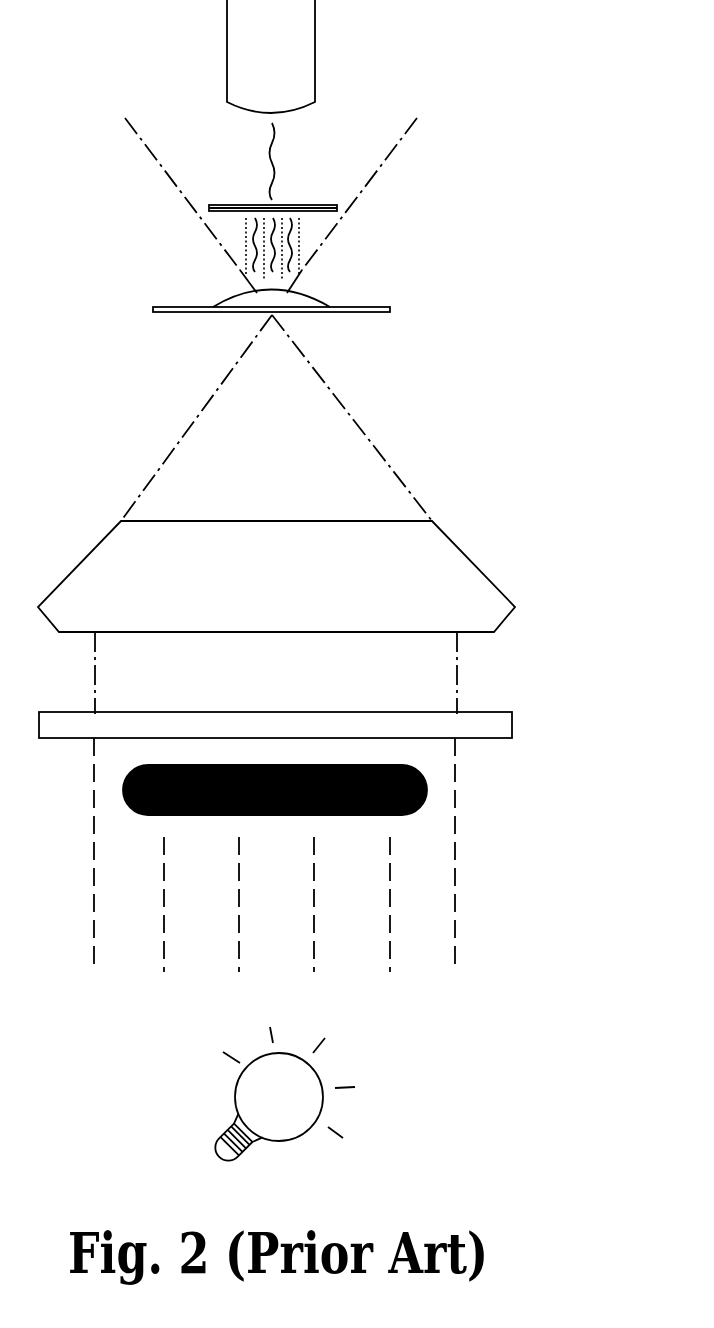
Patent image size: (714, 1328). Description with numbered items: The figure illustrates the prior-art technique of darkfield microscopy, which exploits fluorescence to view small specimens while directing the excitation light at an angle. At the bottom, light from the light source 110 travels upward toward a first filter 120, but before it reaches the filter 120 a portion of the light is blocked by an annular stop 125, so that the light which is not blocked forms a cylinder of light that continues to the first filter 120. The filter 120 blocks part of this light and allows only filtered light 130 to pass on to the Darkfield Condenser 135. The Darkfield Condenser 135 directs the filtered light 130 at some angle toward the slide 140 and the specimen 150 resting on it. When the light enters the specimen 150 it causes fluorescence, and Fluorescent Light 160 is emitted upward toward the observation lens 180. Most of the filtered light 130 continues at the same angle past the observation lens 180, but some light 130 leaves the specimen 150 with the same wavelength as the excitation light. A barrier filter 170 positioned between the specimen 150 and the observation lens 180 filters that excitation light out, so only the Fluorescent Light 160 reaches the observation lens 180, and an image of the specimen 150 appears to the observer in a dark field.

The light source 110 is at (345, 1063).
The first filter 120 is at (512, 720).
The annular stop 125 is at (427, 788).
The filtered light 130 is at (397, 143).
The Darkfield Condenser 135 is at (489, 575).
The slide 140 is at (390, 309).
The specimen 150 is at (320, 295).
The Fluorescent Light 160 is at (273, 163).
The barrier filter 170 is at (223, 204).
The observation lens 180 is at (316, 56).